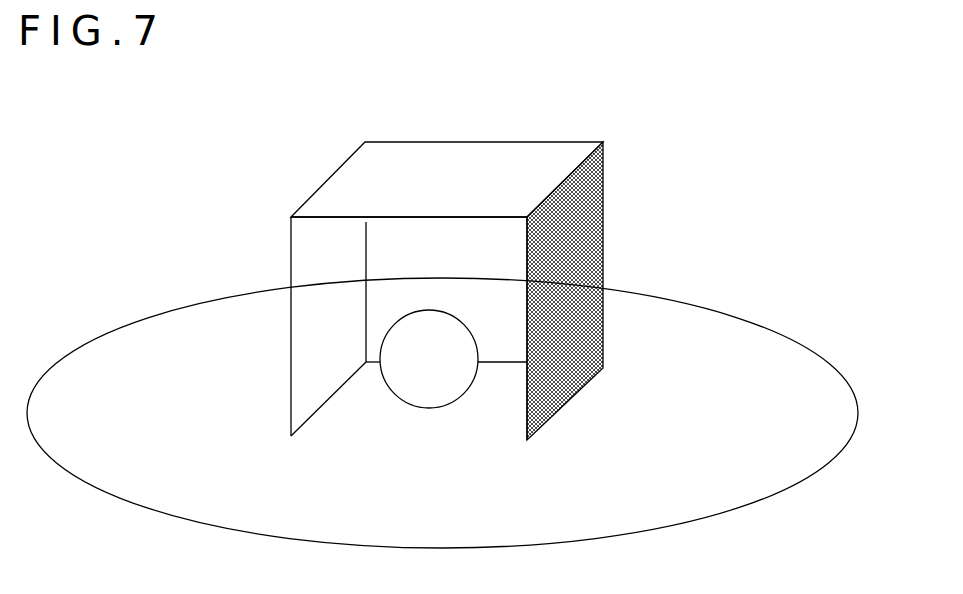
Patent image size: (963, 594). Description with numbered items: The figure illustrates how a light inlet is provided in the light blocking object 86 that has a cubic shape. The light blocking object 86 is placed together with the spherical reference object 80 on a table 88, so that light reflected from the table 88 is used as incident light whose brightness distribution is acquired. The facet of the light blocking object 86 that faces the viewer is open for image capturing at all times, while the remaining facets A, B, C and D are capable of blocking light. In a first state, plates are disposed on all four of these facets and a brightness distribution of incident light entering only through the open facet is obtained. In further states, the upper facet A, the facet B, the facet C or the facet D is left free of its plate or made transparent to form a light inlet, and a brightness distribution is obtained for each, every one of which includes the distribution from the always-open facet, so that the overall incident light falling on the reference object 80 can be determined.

The reference object 80 is at (400, 402).
The light blocking object 86 is at (542, 142).
The table 88 is at (833, 362).